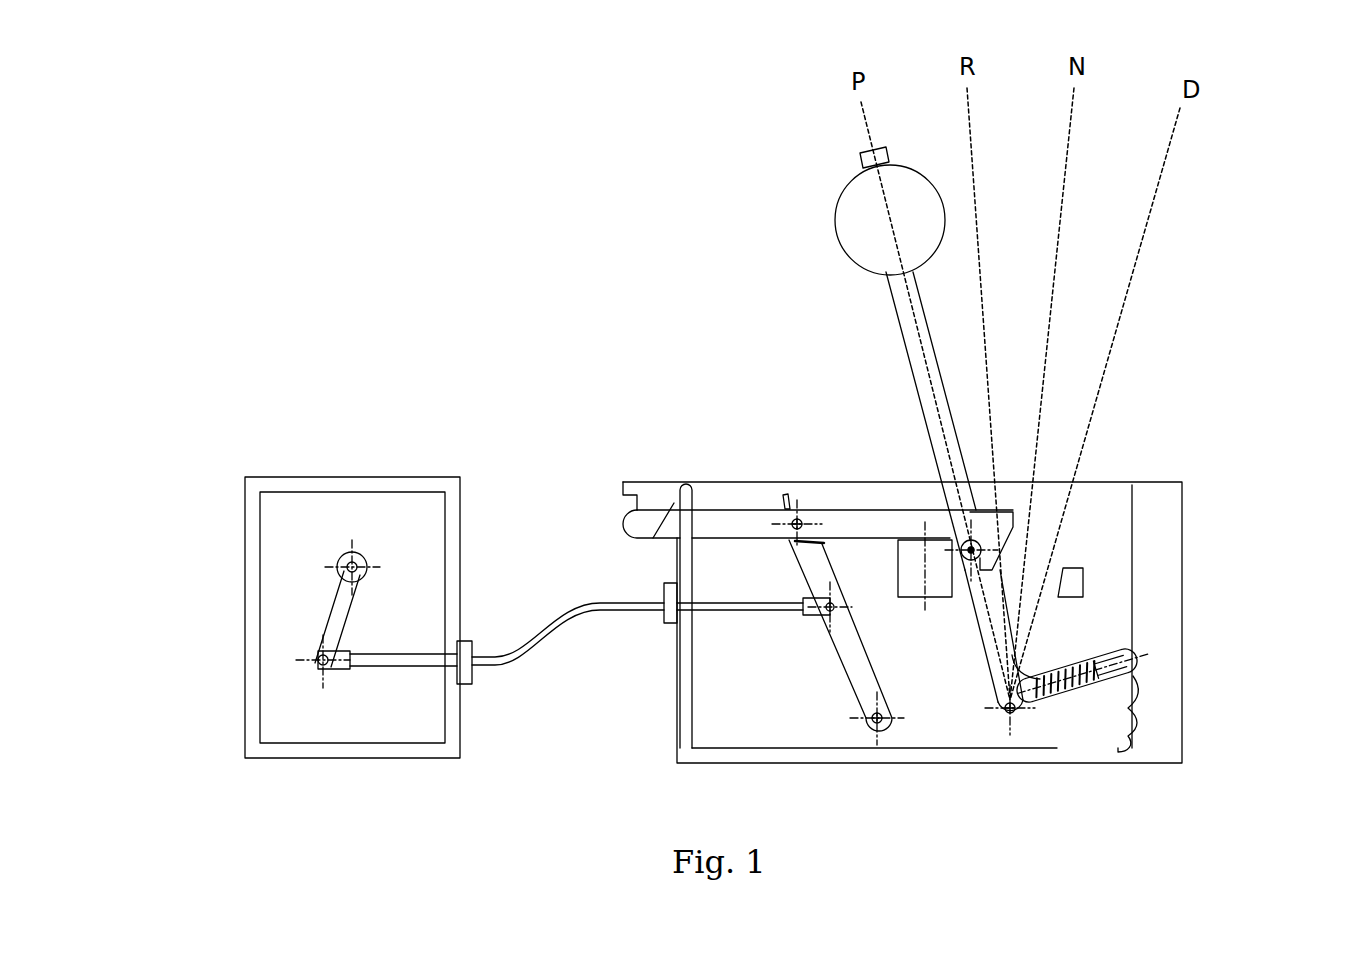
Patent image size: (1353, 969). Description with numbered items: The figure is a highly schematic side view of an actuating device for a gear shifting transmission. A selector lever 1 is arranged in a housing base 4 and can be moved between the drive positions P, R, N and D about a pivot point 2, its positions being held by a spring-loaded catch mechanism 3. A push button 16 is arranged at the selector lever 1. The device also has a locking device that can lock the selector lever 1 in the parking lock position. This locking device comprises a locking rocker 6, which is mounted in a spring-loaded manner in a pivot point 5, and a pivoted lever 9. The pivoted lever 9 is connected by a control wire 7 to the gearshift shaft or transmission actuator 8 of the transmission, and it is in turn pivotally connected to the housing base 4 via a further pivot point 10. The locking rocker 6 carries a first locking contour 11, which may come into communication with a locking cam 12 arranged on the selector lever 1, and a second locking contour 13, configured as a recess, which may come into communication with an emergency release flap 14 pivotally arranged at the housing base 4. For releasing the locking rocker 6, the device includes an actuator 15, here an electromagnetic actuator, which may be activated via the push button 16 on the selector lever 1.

The selector lever 1 is at (910, 308).
The pivot point 2 is at (1000, 738).
The spring-loaded catch mechanism 3 is at (1085, 705).
The housing base 4 is at (1218, 574).
The pivot point 5 is at (803, 510).
The locking rocker 6 is at (740, 518).
The control wire 7 is at (552, 632).
The transmission actuator 8 is at (203, 565).
The pivoted lever 9 is at (848, 662).
The pivot point 10 is at (870, 735).
The first locking contour 11 is at (987, 533).
The locking cam 12 is at (968, 562).
The second locking contour 13 is at (665, 530).
The emergency release flap 14 is at (654, 503).
The actuator 15 is at (912, 569).
The push button 16 is at (866, 156).